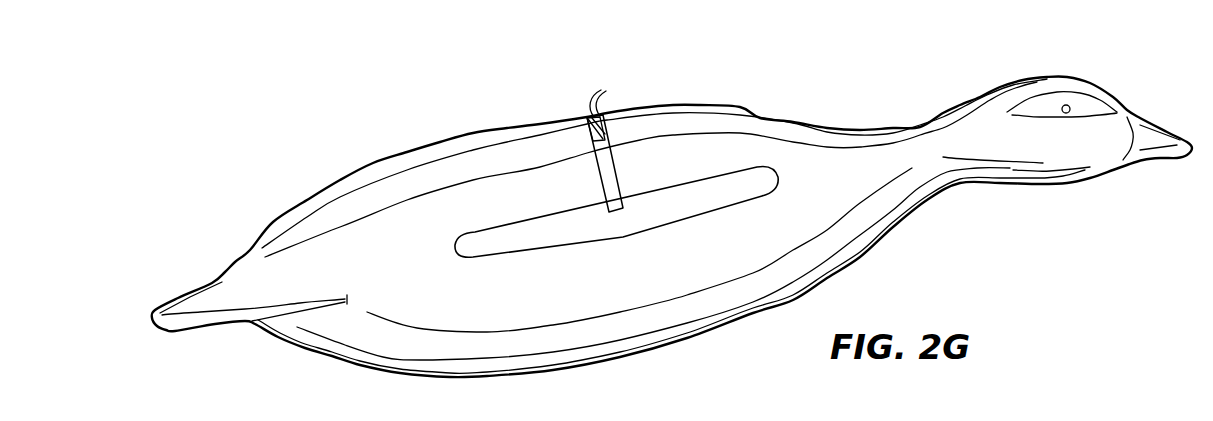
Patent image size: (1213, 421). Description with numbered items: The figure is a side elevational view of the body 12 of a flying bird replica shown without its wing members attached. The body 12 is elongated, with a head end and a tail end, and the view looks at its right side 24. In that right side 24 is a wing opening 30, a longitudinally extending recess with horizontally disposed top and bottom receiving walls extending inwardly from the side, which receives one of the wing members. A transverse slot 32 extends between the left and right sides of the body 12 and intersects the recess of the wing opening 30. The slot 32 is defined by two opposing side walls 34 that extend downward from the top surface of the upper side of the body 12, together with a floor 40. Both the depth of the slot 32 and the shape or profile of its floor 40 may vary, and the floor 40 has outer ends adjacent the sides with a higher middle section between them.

The body 12 is at (712, 90).
The right side 24 is at (624, 283).
The wing opening 30 is at (763, 166).
The transverse slot 32 is at (592, 95).
The side walls 34 is at (606, 91).
The floor 40 is at (583, 118).